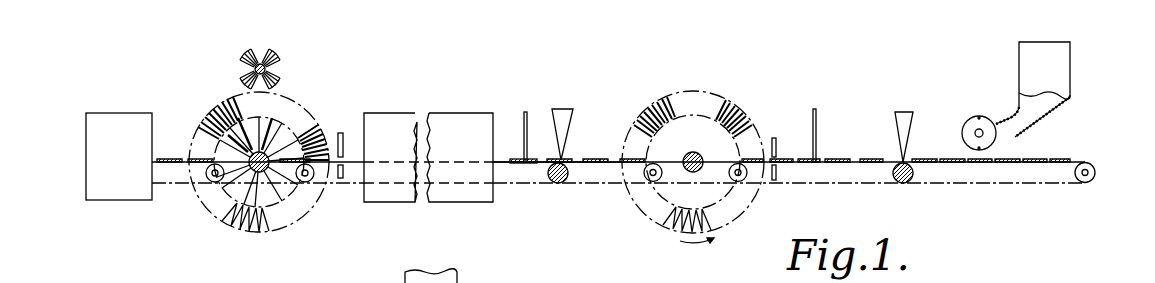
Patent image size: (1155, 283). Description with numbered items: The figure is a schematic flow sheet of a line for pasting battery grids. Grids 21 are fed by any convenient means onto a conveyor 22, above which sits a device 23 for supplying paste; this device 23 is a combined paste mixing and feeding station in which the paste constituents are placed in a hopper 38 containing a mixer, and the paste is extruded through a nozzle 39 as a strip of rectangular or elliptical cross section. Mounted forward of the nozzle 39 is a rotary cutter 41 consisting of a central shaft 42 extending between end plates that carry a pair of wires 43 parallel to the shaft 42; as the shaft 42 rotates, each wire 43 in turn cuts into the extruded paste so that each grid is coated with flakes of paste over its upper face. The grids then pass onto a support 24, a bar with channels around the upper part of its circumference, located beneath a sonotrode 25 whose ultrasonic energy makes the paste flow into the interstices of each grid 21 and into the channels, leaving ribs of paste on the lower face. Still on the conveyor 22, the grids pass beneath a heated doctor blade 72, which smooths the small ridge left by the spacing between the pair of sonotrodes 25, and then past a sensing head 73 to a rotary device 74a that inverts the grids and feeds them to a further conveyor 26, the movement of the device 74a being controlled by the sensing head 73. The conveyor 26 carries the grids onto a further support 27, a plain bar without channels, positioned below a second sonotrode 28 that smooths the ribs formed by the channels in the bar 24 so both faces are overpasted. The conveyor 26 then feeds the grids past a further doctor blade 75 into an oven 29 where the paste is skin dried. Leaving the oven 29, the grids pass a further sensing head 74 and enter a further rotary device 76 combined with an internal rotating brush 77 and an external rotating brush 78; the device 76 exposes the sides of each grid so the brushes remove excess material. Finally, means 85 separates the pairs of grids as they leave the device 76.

The grids 21 is at (1072, 160).
The conveyor 22 is at (1023, 185).
The device for supplying paste 23 is at (1071, 62).
The support 24 is at (898, 180).
The sonotrode 25 is at (898, 130).
The further conveyor 26 is at (513, 183).
The further support 27 is at (563, 182).
The second sonotrode 28 is at (565, 117).
The oven 29 is at (455, 128).
The hopper 38 is at (1062, 99).
The nozzle 39 is at (1017, 130).
The rotary cutter 41 is at (968, 113).
The central shaft 42 is at (977, 133).
The wires 43 is at (981, 121).
The heated doctor blade 72 is at (817, 125).
The sensing head 73 is at (775, 143).
The further sensing head 74 is at (342, 133).
The rotary device 74a is at (722, 188).
The further doctor blade 75 is at (525, 112).
The further rotary device 76 is at (287, 203).
The internal rotating brush 77 is at (273, 117).
The external rotating brush 78 is at (277, 73).
The means for separating grids 85 is at (128, 121).